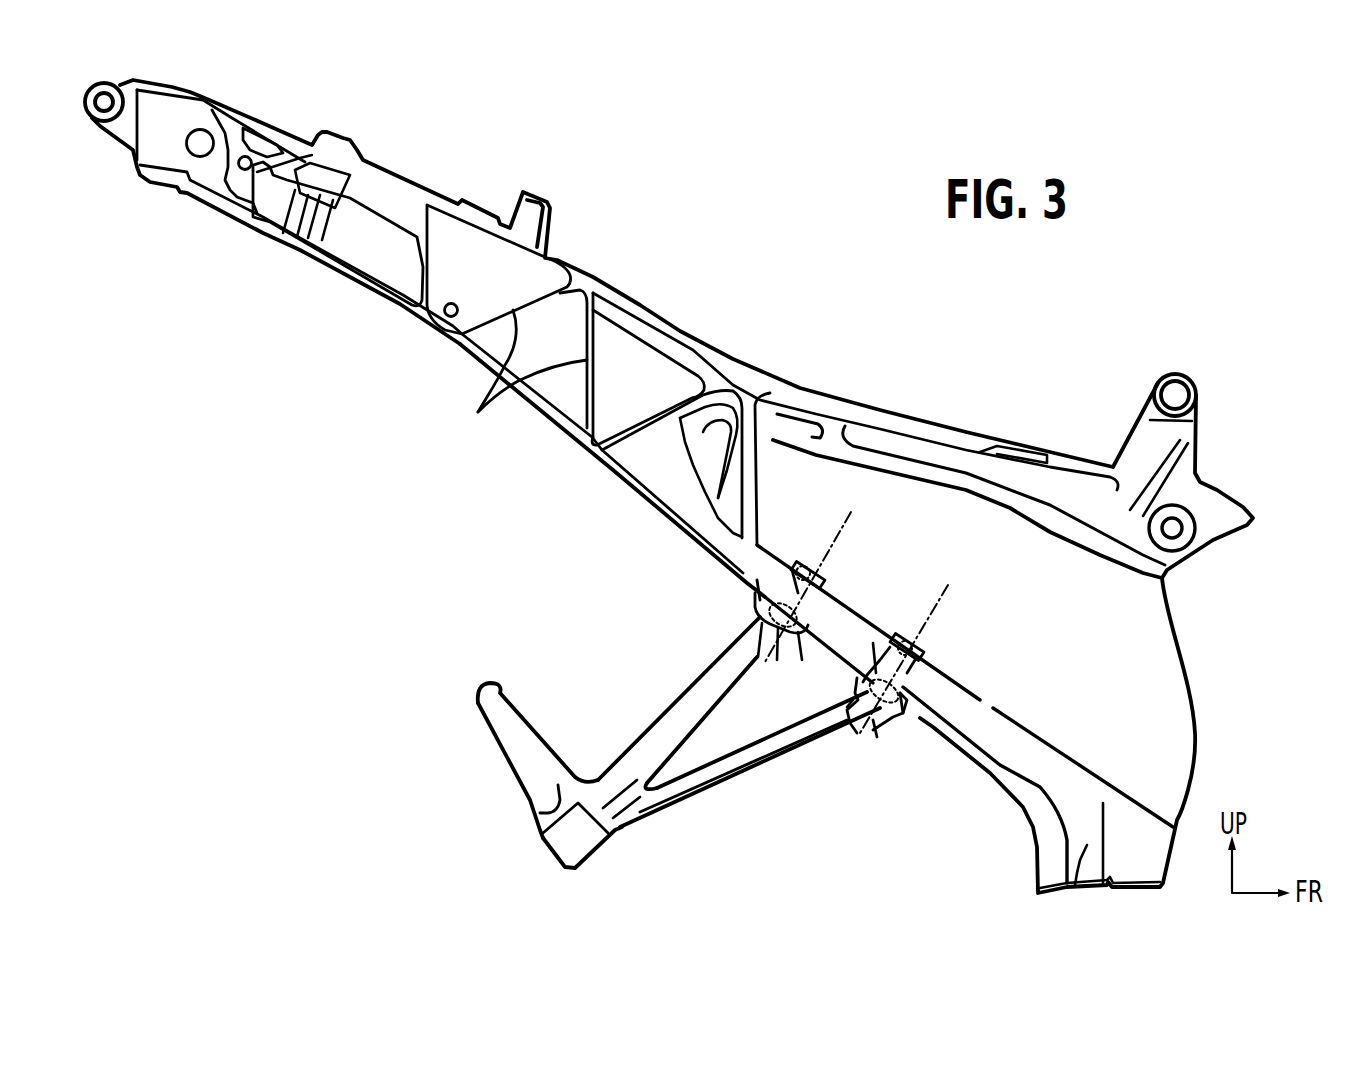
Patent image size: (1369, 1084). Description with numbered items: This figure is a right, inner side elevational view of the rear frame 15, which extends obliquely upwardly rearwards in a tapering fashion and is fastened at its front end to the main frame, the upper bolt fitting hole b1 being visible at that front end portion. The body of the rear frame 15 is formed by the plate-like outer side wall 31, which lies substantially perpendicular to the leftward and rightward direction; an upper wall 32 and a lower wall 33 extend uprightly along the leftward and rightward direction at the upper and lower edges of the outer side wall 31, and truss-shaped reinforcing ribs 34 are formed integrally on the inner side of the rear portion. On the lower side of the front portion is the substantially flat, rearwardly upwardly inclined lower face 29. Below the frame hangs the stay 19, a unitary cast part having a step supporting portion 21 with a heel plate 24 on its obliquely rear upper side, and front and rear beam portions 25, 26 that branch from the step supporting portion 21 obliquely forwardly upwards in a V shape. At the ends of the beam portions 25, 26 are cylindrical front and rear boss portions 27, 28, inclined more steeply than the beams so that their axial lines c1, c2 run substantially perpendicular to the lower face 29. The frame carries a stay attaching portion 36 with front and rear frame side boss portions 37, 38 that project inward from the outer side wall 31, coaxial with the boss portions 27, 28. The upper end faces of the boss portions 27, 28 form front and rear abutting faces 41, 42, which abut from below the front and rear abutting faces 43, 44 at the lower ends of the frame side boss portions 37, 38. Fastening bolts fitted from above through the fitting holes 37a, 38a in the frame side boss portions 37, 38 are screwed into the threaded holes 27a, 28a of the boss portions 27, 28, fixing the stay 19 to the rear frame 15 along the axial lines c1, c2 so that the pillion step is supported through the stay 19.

The rear frame 15 is at (740, 355).
The stay 19 is at (700, 797).
The step supporting portion 21 is at (585, 852).
The heel plate 24 is at (498, 697).
The front beam portion 25 is at (753, 760).
The rear beam portion 26 is at (673, 717).
The front boss portion 27 is at (873, 720).
The threaded hole 27a is at (897, 700).
The rear boss portion 28 is at (757, 618).
The threaded hole 28a is at (768, 600).
The lower face 29 is at (935, 733).
The outer side wall 31 is at (945, 515).
The upper wall portion 32 is at (904, 420).
The lower wall portion 33 is at (633, 485).
The reinforcing ribs 34 is at (520, 377).
The stay attaching portion 36 is at (965, 686).
The front frame side boss portion 37 is at (937, 660).
The fitting hole 37a is at (933, 637).
The rear frame side boss portion 38 is at (785, 593).
The fitting hole 38a is at (823, 580).
The front abutting face 41 is at (897, 638).
The rear abutting face 42 is at (807, 638).
The front abutting face 43 is at (860, 703).
The rear abutting face 44 is at (783, 643).
The upper bolt fitting hole b1 is at (1173, 532).
The axial line c1 is at (927, 600).
The axial line c2 is at (827, 537).